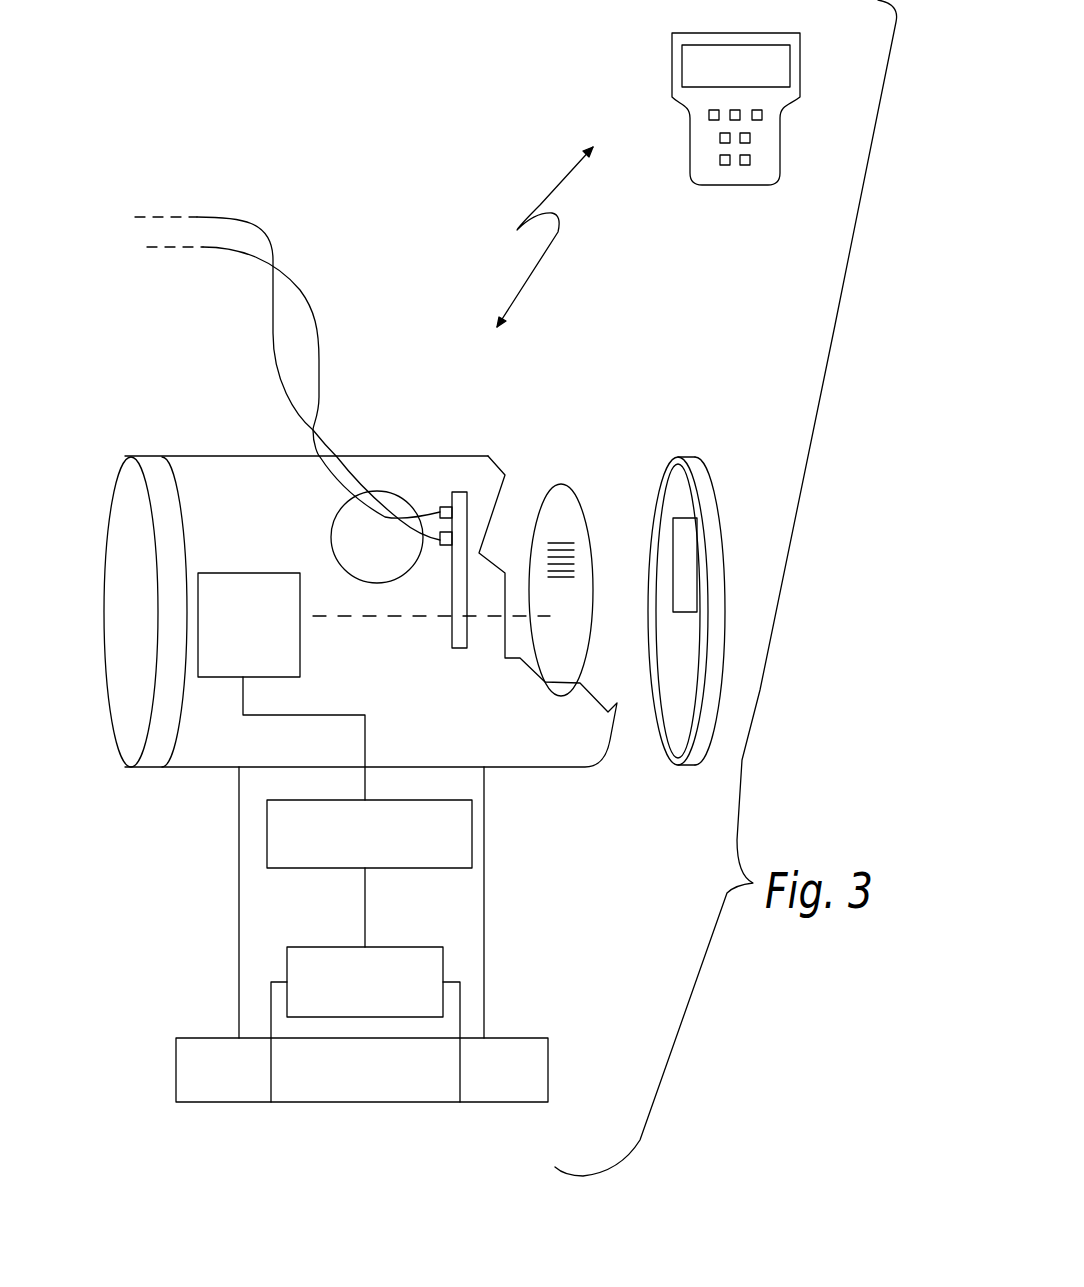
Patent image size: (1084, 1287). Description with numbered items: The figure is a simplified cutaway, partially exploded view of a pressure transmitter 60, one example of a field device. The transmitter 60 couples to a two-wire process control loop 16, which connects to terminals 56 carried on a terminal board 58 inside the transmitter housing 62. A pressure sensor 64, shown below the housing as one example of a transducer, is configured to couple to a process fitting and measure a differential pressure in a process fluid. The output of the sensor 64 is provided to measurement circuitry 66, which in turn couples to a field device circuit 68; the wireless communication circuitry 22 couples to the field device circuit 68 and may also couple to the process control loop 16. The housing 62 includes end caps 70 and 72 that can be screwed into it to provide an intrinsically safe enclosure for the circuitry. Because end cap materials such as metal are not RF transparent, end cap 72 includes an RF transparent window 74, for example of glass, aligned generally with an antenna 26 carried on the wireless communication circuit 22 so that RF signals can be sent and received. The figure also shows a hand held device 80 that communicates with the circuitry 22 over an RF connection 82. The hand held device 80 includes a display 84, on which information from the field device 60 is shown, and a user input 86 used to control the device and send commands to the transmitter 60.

The two-wire process control loop 16 is at (275, 337).
The wireless communication circuitry 22 is at (555, 485).
The antenna 26 is at (560, 577).
The terminals 56 is at (440, 532).
The terminal board 58 is at (460, 497).
The pressure transmitter 60 is at (197, 447).
The transmitter housing 62 is at (239, 830).
The pressure sensor 64 is at (445, 957).
The measurement circuitry 66 is at (287, 857).
The field device circuit 68 is at (213, 667).
The end cap 70 is at (123, 600).
The end cap 72 is at (683, 462).
The RF transparent window 74 is at (688, 583).
The hand held device 80 is at (677, 132).
The RF connection 82 is at (552, 247).
The display 84 is at (757, 63).
The user input 86 is at (753, 138).